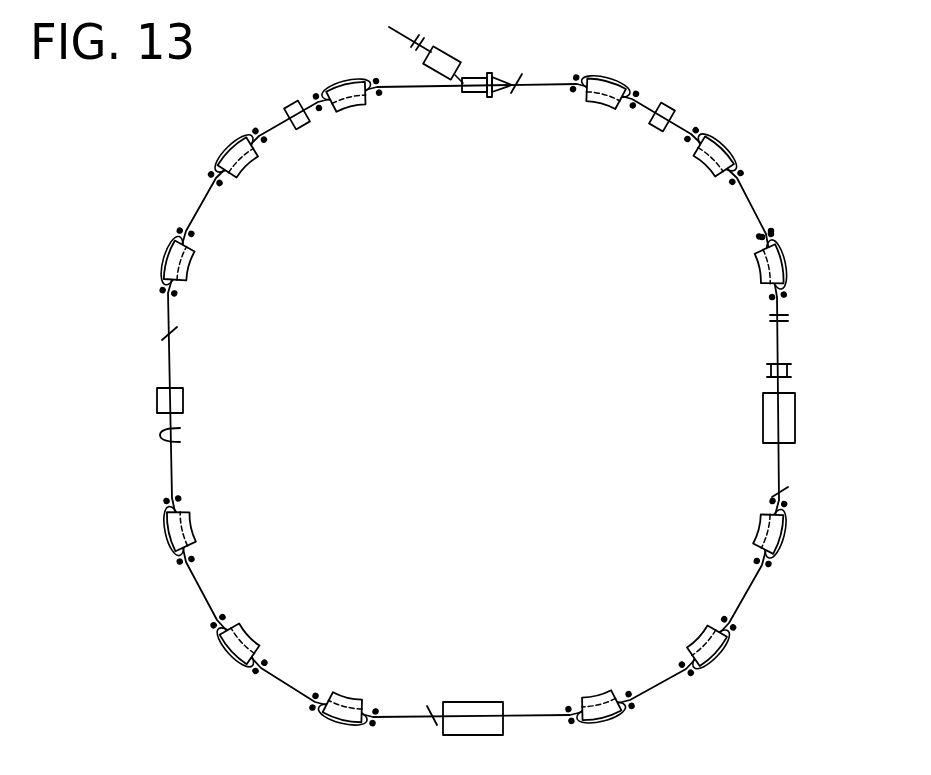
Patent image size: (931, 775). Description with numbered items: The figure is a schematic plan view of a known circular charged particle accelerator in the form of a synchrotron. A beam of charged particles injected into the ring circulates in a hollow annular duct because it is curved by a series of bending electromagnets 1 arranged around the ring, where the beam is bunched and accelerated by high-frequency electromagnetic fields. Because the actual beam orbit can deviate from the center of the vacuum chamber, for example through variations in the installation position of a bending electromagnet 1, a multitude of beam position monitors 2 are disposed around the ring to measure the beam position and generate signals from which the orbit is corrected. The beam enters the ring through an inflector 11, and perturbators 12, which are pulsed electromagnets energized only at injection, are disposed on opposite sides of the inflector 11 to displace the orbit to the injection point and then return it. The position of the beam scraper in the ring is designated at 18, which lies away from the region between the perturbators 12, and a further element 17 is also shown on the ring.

The bending electromagnet 1 is at (757, 279).
The beam position monitors 2 is at (761, 238).
The inflector 11 is at (477, 93).
The perturbators 12 is at (304, 131).
The beam position monitor 17 is at (790, 370).
The beam scraper position 18 is at (184, 398).